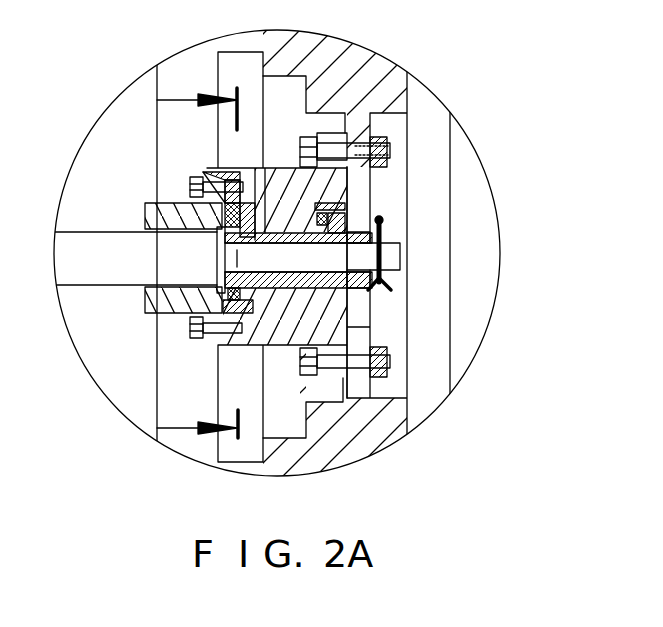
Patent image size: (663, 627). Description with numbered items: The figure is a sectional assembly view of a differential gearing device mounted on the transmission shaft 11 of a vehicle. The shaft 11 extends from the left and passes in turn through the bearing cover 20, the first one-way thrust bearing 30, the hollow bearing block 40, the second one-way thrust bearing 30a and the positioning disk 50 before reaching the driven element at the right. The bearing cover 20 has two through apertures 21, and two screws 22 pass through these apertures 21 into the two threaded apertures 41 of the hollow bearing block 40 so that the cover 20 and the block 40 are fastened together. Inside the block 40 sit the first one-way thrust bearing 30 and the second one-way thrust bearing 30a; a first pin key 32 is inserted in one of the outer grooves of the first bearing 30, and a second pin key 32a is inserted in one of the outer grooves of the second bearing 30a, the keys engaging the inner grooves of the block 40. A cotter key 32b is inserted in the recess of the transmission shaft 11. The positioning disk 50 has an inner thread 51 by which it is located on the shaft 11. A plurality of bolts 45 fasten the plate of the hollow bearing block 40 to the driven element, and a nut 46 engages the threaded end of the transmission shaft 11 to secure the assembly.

The transmission shaft 11 is at (87, 270).
The bearing cover 20 is at (150, 213).
The through apertures 21 is at (212, 345).
The screws 22 is at (190, 329).
The first one-way thrust bearing 30 is at (204, 177).
The second one-way thrust bearing 30a is at (320, 313).
The first pin key 32 is at (244, 172).
The second pin key 32a is at (333, 204).
The cotter key 32b is at (283, 232).
The hollow bearing block 40 is at (250, 337).
The threaded apertures 41 is at (240, 313).
The bolts 45 is at (331, 150).
The nut 46 is at (384, 140).
The positioning disk 50 is at (355, 287).
The inner thread 51 is at (383, 222).